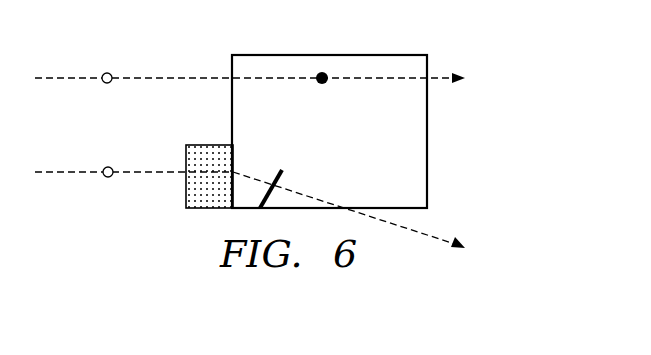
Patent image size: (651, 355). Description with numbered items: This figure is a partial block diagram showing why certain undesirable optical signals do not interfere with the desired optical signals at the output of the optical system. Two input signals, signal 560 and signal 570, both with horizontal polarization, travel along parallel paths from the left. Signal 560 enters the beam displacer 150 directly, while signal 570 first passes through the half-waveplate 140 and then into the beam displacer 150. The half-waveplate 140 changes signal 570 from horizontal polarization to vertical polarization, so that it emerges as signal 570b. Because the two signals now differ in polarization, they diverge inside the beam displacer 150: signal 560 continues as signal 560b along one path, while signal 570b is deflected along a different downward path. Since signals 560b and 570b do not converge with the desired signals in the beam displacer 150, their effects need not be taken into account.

The beam displacer 150 is at (380, 63).
The half-waveplate 140 is at (205, 145).
The signal 560 is at (106, 73).
The signal 570 is at (108, 177).
The signal 560b is at (323, 84).
The signal 570b is at (286, 172).